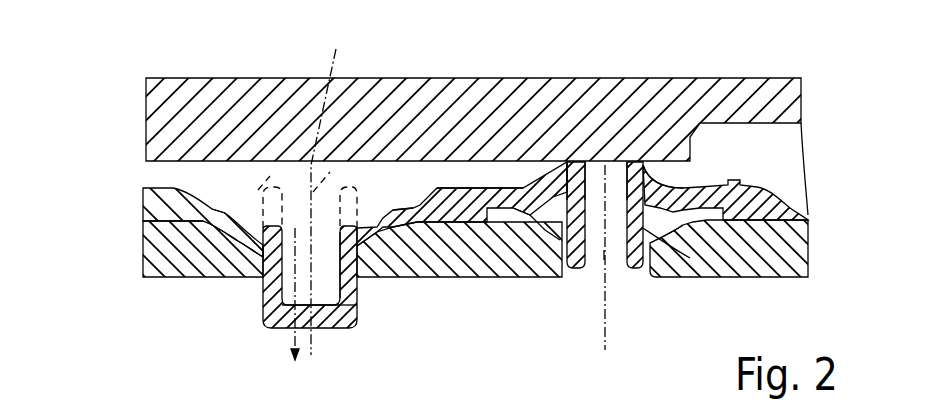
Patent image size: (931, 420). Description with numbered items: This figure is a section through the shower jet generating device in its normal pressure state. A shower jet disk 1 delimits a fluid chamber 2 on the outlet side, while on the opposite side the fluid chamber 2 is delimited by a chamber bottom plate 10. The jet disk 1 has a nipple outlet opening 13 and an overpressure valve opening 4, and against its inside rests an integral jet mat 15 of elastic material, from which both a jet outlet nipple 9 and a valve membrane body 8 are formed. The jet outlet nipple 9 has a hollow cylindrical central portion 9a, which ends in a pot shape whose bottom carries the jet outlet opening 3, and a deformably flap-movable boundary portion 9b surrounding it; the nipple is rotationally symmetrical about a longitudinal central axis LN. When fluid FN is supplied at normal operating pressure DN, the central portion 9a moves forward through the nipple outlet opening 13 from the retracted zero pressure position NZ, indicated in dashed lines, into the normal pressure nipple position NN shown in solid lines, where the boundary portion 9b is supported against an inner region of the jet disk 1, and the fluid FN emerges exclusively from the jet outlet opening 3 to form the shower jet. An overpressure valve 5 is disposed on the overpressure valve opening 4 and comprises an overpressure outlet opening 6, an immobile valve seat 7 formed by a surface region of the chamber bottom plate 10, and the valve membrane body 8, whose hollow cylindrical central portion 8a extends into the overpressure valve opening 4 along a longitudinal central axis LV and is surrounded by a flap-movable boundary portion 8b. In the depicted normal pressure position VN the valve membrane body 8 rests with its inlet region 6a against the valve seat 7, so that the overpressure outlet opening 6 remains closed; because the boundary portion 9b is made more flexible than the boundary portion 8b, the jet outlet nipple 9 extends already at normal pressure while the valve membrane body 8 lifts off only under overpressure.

The shower jet disk 1 is at (150, 248).
The fluid chamber 2 is at (403, 183).
The jet outlet opening 3 is at (297, 336).
The overpressure valve opening 4 is at (566, 278).
The overpressure valve 5 is at (583, 165).
The overpressure outlet opening 6 is at (611, 250).
The inlet region 6a is at (592, 168).
The valve seat 7 is at (629, 168).
The valve membrane body 8 is at (637, 278).
The central portion 8a is at (685, 262).
The boundary portion 8b is at (672, 185).
The jet outlet nipple 9 is at (265, 318).
The central portion 9a is at (352, 312).
The boundary portion 9b is at (265, 224).
The chamber bottom plate 10 is at (162, 124).
The nipple outlet opening 13 is at (266, 288).
The jet mat 15 is at (150, 203).
The zero pressure position NZ is at (258, 188).
The longitudinal central axis LN is at (333, 187).
The normal operating pressure DN is at (443, 175).
The normal pressure nipple position NN is at (348, 283).
The fluid FN is at (292, 343).
The normal pressure position VN is at (546, 238).
The longitudinal central axis LV is at (597, 320).